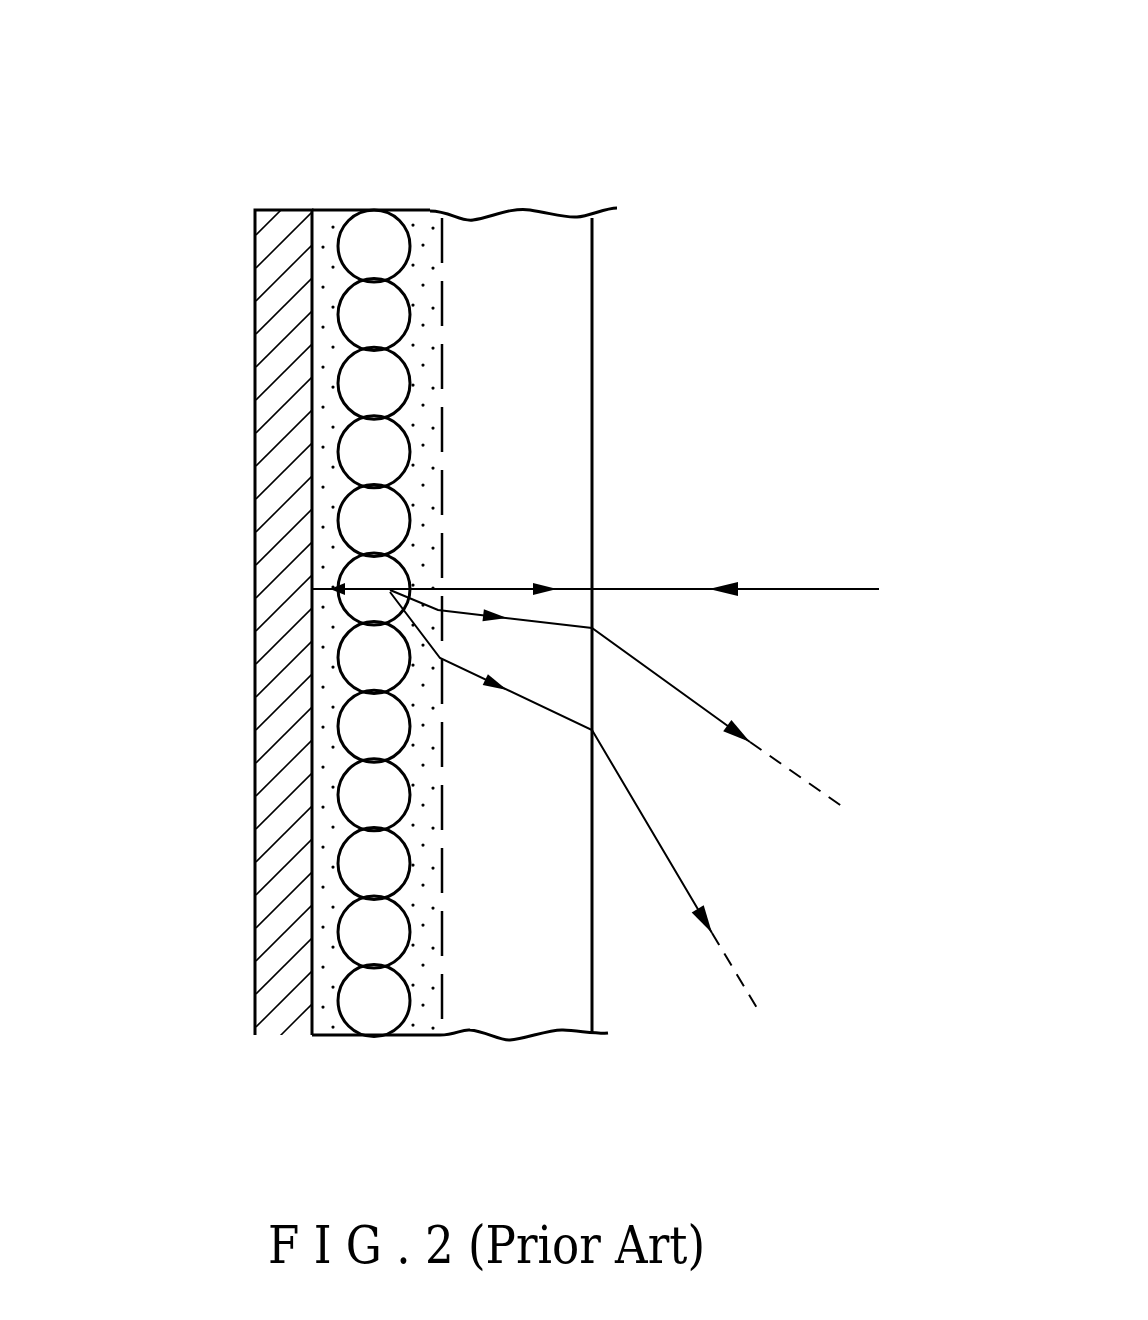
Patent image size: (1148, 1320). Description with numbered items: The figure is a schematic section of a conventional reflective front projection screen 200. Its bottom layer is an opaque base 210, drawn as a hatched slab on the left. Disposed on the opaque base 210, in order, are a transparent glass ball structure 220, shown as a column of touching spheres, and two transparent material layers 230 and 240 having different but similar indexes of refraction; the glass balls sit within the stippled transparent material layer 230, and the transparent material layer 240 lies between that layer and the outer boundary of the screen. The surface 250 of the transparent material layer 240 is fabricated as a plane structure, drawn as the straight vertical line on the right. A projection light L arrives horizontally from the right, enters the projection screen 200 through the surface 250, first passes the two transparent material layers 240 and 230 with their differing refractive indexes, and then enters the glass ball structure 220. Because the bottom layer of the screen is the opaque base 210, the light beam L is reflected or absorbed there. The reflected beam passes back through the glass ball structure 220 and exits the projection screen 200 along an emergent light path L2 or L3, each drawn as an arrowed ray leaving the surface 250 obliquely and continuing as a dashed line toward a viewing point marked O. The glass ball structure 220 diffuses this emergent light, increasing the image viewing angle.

The reflective front projection screen 200 is at (200, 62).
The opaque base 210 is at (278, 817).
The transparent glass ball structure 220 is at (373, 232).
The transparent material layer 230 is at (432, 230).
The transparent material layer 240 is at (473, 237).
The surface 250 is at (593, 340).
The projection light L is at (612, 589).
The emergent light path L2 is at (616, 698).
The emergent light path L3 is at (575, 802).
The observer O is at (816, 925).